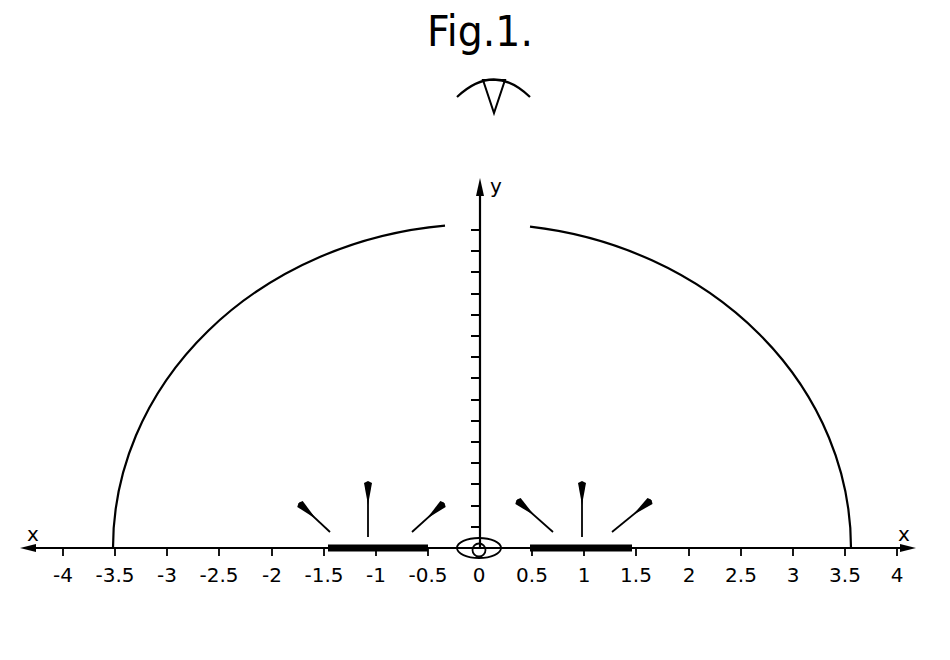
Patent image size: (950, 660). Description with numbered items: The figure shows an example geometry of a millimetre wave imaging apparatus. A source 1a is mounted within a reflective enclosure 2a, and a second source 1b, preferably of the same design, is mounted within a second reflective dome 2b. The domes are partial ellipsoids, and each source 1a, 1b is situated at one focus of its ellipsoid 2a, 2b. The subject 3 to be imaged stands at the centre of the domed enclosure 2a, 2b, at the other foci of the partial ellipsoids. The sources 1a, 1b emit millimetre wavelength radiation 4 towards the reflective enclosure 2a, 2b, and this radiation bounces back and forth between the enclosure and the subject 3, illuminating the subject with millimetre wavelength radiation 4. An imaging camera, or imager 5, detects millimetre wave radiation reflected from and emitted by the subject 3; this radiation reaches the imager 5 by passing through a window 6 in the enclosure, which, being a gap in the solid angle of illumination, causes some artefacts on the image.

The source 1a is at (398, 555).
The second source 1b is at (568, 553).
The reflective enclosure 2a is at (218, 327).
The second reflective dome 2b is at (725, 303).
The subject 3 is at (488, 558).
The millimetre wavelength radiation 4 is at (475, 494).
The imaging camera (imager) 5 is at (530, 96).
The window 6 is at (507, 230).